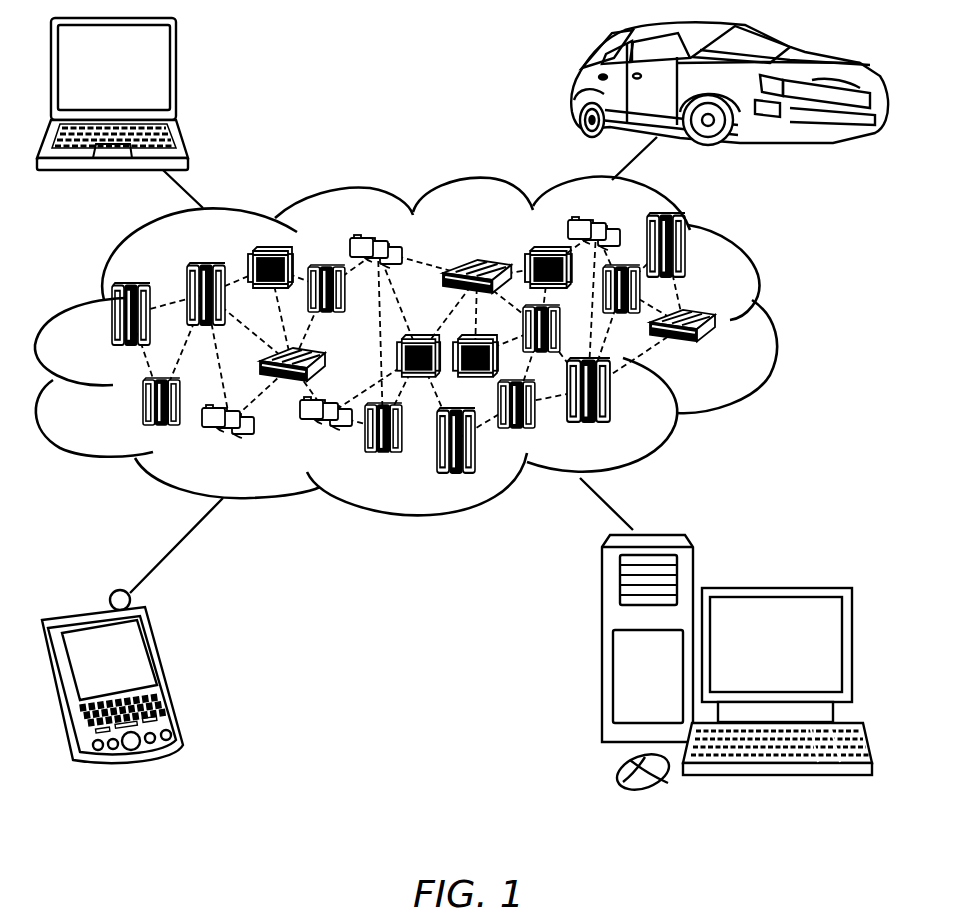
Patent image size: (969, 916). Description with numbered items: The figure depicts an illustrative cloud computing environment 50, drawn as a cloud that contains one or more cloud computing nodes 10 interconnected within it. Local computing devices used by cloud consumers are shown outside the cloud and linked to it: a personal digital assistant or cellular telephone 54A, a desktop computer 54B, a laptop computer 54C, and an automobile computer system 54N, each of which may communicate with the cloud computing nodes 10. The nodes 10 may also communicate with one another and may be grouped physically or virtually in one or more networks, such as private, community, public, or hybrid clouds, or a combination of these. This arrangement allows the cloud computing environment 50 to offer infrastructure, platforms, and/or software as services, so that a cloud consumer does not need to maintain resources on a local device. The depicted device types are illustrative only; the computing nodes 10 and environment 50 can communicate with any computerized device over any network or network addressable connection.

The cloud computing nodes 10 is at (722, 352).
The cloud computing environment 50 is at (775, 323).
The personal digital assistant or cellular telephone 54A is at (167, 670).
The desktop computer 54B is at (772, 587).
The laptop computer 54C is at (175, 72).
The automobile computer system 54N is at (572, 88).